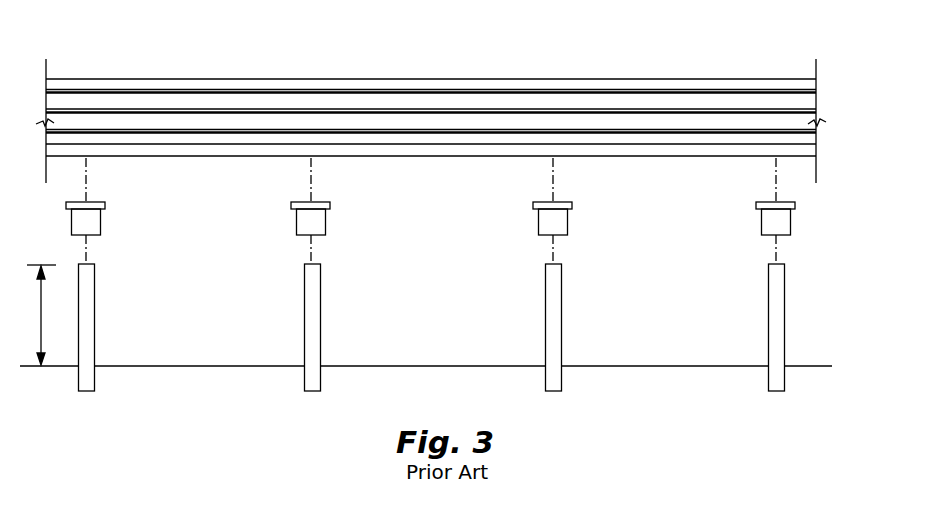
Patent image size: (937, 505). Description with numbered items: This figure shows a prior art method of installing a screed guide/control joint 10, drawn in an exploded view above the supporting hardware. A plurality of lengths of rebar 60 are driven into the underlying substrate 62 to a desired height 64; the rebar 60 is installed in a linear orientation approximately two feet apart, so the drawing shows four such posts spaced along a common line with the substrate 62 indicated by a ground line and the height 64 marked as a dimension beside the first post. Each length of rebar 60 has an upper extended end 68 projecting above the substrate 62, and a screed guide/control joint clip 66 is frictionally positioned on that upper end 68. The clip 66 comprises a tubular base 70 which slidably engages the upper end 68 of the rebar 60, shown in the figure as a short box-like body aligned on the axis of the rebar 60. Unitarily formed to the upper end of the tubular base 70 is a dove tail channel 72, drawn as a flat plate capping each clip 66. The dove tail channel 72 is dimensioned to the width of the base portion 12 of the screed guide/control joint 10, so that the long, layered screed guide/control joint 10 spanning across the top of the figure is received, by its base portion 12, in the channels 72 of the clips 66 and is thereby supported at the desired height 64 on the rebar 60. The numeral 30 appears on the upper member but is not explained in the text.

The screed guide/control joint 10 is at (315, 46).
The base portion 12 is at (444, 158).
The beam / joist assembly 30 is at (488, 79).
The rebar 60 is at (95, 306).
The underlying substrate 62 is at (164, 411).
The desired height 64 is at (41, 315).
The screed guide/control joint clip 66 is at (100, 223).
The upper extended end 68 is at (804, 260).
The tubular base 70 is at (77, 222).
The dove tail channel 72 is at (94, 202).